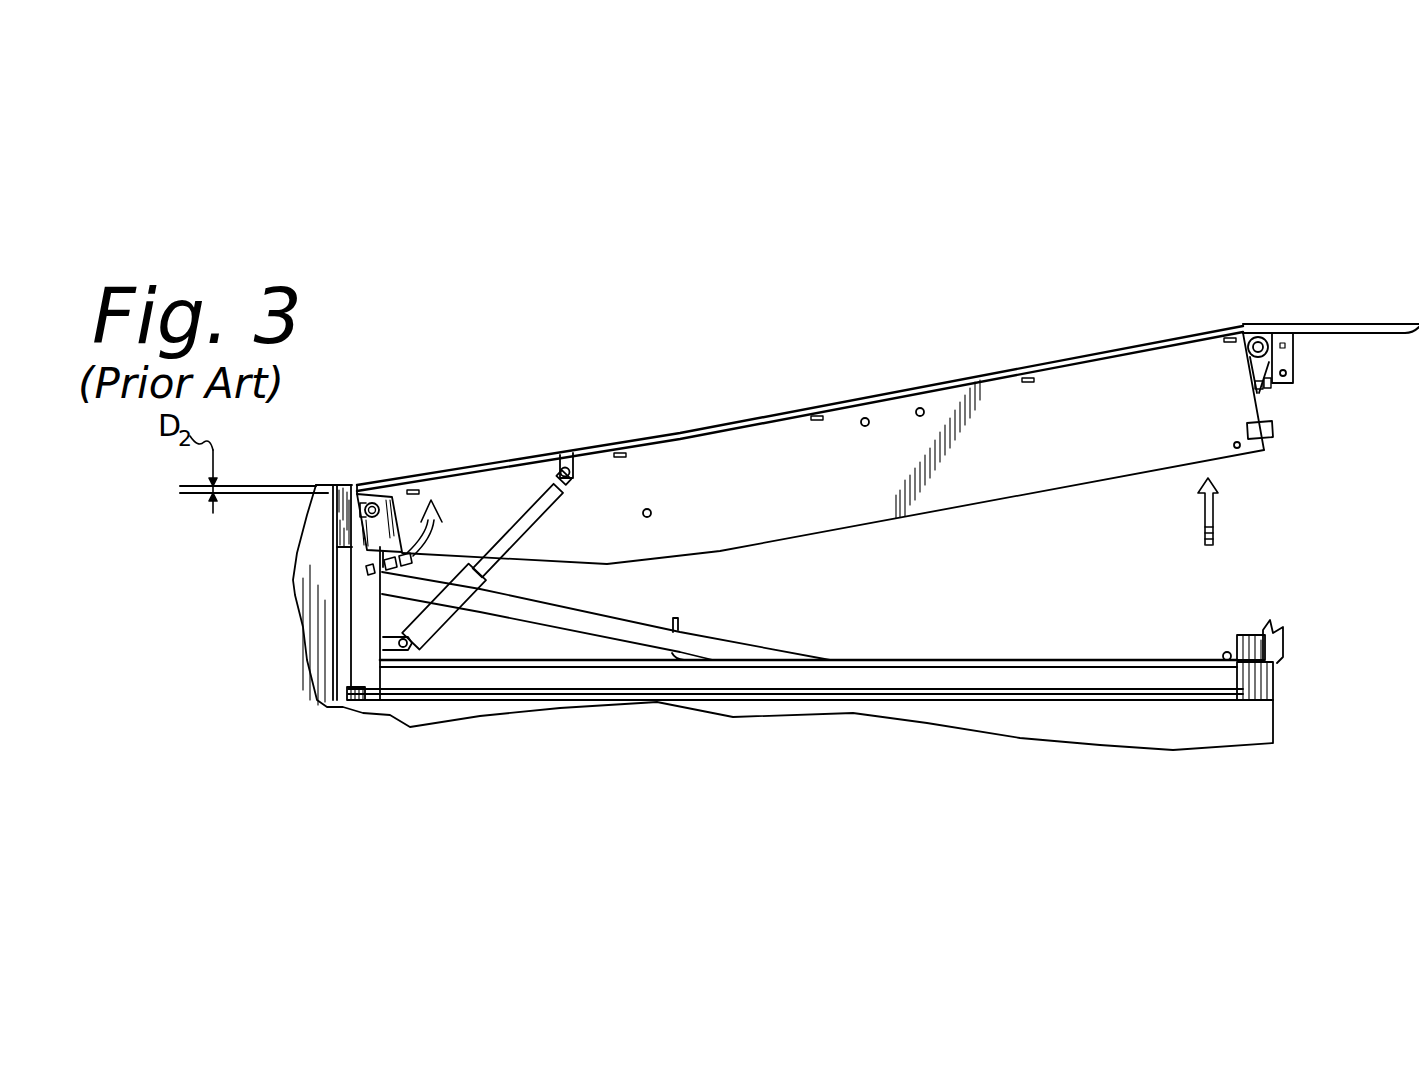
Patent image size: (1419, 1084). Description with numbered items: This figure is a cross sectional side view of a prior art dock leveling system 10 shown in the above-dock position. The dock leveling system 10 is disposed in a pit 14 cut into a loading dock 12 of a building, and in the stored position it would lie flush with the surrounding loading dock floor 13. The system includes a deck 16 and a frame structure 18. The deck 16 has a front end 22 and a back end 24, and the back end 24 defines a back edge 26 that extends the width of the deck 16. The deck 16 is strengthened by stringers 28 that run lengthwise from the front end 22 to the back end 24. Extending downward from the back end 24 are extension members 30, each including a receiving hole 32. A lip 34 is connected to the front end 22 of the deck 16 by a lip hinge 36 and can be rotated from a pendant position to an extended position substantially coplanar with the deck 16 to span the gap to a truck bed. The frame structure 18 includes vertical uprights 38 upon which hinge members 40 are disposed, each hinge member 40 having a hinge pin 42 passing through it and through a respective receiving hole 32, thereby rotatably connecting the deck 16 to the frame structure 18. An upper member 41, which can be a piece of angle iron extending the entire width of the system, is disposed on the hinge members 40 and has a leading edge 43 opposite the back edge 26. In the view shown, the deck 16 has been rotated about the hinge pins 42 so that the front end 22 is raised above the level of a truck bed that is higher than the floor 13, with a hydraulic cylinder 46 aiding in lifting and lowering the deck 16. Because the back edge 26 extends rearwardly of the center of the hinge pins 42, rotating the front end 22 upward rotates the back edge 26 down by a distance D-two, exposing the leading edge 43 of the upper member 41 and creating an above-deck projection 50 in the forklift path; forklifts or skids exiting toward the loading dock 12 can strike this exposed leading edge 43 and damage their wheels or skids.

The dock leveling system 10 is at (694, 421).
The loading dock 12 is at (317, 484).
The loading dock floor 13 is at (356, 464).
The pit 14 is at (526, 653).
The deck 16 is at (782, 413).
The frame structure 18 is at (600, 676).
The front end 22 is at (1237, 316).
The back end 24 is at (360, 478).
The back edge 26 is at (405, 480).
The stringers 28 is at (968, 505).
The extension members 30 is at (382, 572).
The receiving hole 32 is at (342, 560).
The lip 34 is at (1312, 323).
The lip hinge 36 is at (1293, 385).
The vertical uprights 38 is at (350, 673).
The hinge members 40 is at (337, 534).
The upper member 41 is at (340, 518).
The hinge pin 42 is at (364, 511).
The leading edge 43 is at (338, 483).
The hydraulic cylinder 46 is at (432, 637).
The above-deck projection 50 is at (363, 471).